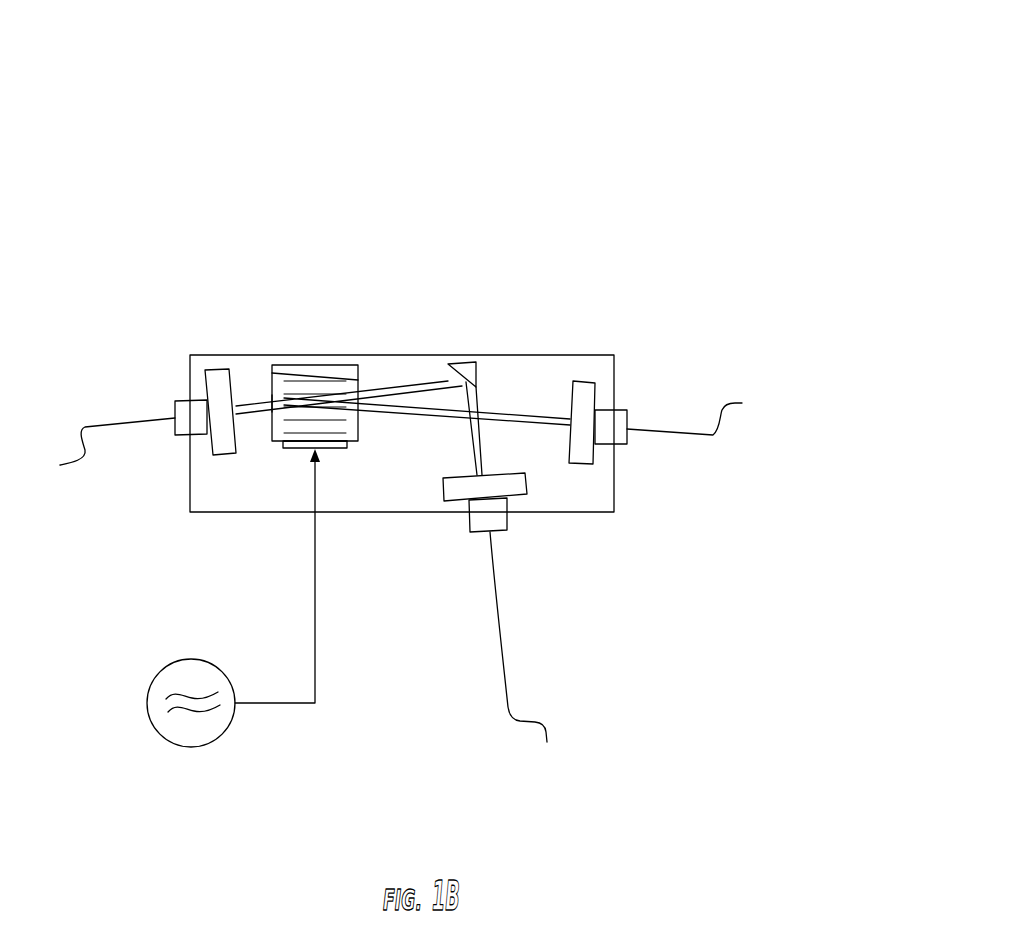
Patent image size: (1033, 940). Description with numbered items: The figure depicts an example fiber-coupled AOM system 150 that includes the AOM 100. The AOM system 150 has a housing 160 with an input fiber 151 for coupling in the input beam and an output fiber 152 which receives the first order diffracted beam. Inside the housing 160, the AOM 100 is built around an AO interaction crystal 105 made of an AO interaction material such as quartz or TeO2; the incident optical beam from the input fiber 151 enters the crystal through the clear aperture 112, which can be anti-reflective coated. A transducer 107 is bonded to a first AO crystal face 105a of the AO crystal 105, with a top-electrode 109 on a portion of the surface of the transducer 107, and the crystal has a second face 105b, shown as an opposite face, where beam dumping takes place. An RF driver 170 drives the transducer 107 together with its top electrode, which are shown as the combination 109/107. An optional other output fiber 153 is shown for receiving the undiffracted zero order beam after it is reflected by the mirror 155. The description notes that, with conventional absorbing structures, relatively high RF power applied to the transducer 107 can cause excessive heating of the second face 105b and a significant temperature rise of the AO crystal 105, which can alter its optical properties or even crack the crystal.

The fiber-coupled AOM system 150 is at (671, 126).
The AOM 100 is at (341, 510).
The AO interaction crystal 105 is at (290, 387).
The first AO crystal face 105a is at (352, 447).
The second face 105b is at (297, 367).
The clear aperture 112 is at (268, 405).
The top-electrode 109 is at (354, 635).
The transducer 107 is at (328, 450).
The input fiber 151 is at (164, 429).
The output fiber 152 is at (657, 437).
The second output fiber 153 is at (503, 608).
The mirror 155 is at (489, 353).
The housing 160 is at (451, 512).
The RF driver 170 is at (192, 747).